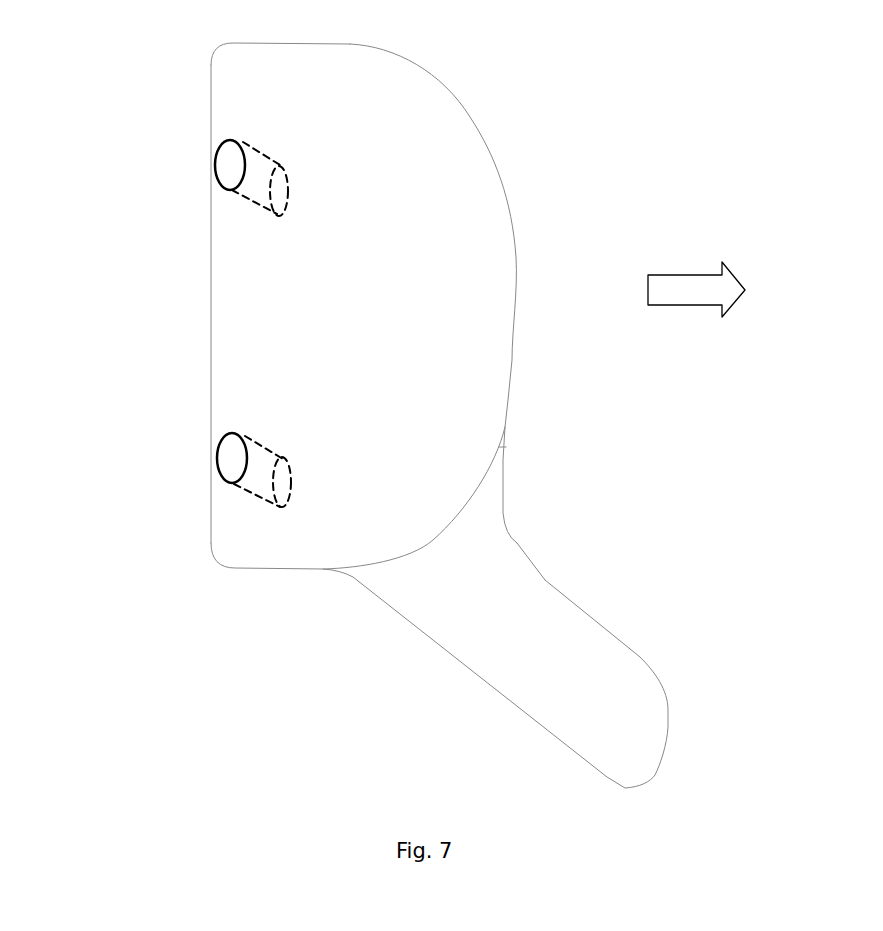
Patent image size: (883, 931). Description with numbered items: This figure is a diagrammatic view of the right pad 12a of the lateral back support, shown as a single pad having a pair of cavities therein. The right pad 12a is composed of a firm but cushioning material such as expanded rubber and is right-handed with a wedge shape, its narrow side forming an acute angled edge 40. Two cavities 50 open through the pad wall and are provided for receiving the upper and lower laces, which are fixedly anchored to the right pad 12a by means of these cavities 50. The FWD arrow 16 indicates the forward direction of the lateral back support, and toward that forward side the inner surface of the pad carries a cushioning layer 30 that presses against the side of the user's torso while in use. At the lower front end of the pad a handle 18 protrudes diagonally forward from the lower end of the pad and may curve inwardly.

The right pad 12a is at (496, 135).
The FWD arrow 16 is at (740, 280).
The handle 18 is at (650, 727).
The cushioning layer 30 is at (487, 235).
The acute angled edge 40 is at (210, 348).
The cavities 50 is at (217, 160).